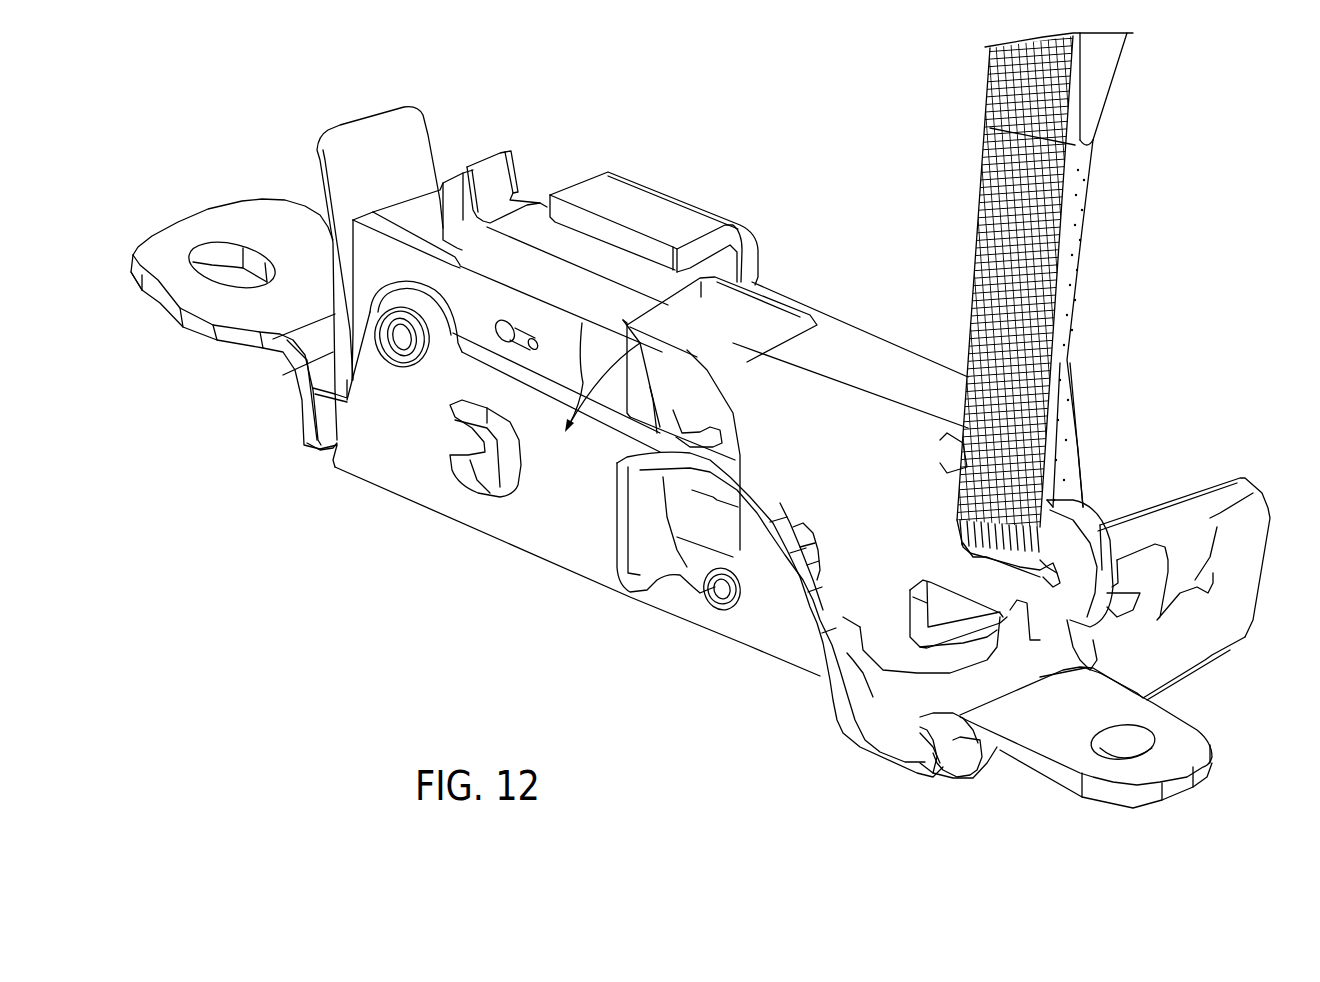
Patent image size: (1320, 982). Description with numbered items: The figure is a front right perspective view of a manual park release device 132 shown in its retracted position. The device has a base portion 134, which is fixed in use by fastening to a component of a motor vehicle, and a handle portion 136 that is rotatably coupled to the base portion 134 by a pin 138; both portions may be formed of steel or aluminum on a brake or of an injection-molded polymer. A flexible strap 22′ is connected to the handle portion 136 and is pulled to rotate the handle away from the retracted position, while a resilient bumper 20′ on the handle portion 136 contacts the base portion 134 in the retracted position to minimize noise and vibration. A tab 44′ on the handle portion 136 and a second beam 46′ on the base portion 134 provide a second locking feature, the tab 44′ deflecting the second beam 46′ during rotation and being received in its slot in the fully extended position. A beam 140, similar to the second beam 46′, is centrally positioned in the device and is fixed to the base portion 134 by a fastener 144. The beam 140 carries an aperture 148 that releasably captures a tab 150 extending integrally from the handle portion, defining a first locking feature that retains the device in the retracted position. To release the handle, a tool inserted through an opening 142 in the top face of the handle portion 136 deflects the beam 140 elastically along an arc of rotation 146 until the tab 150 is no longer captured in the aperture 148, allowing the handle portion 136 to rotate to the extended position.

The manual park release device 132 is at (1203, 131).
The base portion 134 is at (403, 460).
The handle portion 136 is at (878, 562).
The pin 138 is at (400, 340).
The beam 140 is at (683, 362).
The opening 142 is at (777, 337).
The fastener 144 is at (720, 592).
The arc of rotation 146 is at (652, 424).
The aperture 148 is at (733, 443).
The tab 150 is at (700, 432).
The bumper 20′ is at (957, 657).
The strap 22′ is at (995, 130).
The tab 44′ is at (495, 168).
The second beam 46′ is at (376, 128).